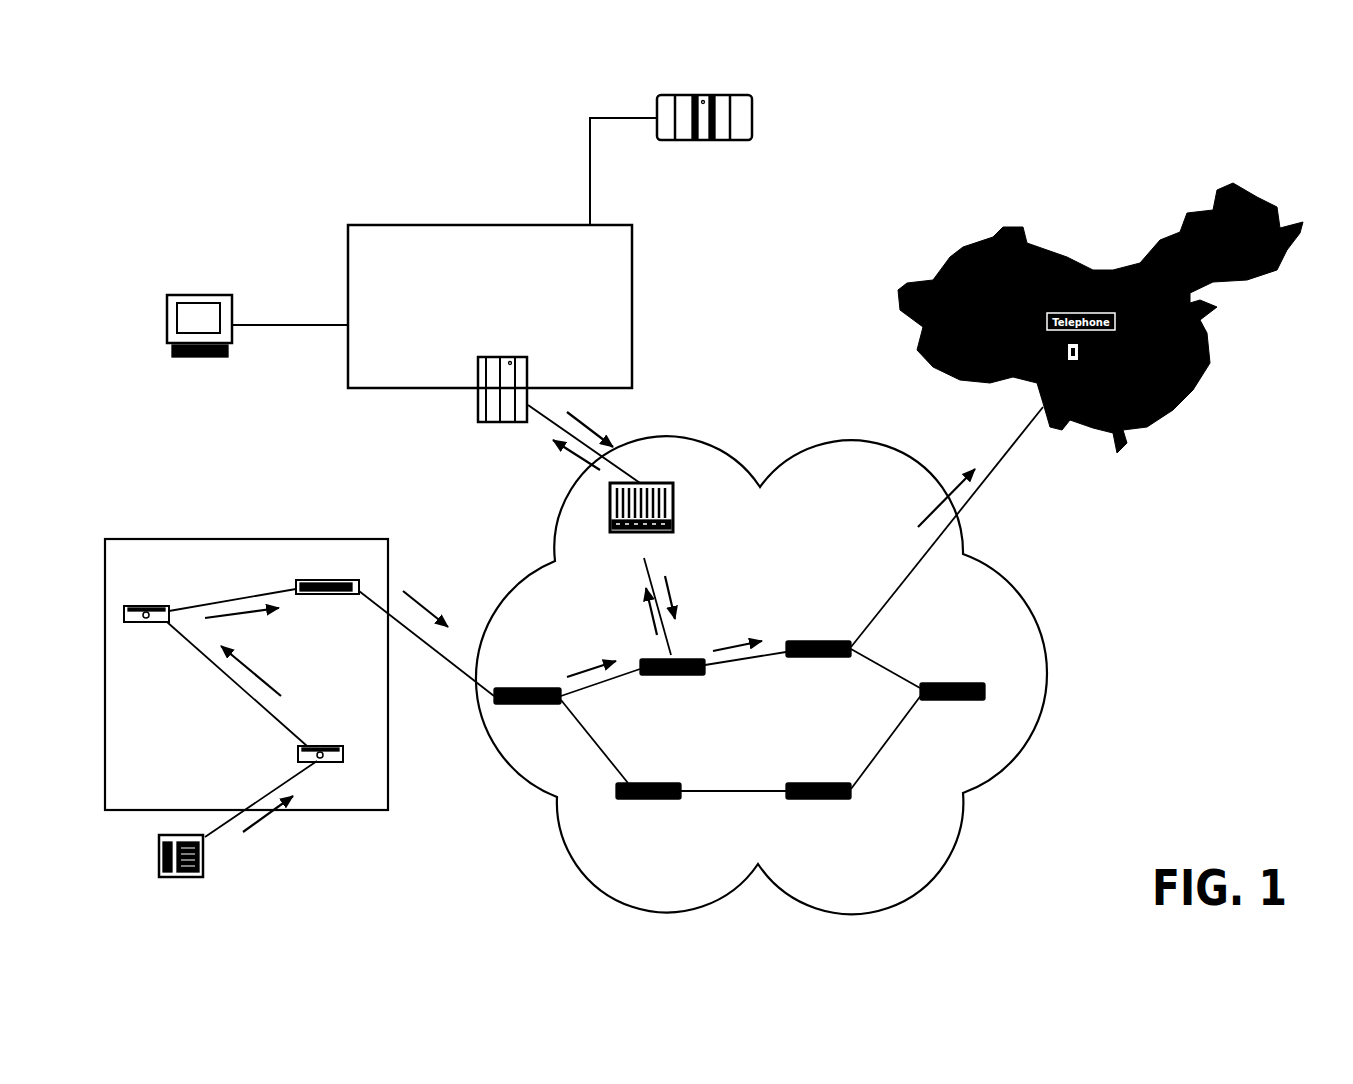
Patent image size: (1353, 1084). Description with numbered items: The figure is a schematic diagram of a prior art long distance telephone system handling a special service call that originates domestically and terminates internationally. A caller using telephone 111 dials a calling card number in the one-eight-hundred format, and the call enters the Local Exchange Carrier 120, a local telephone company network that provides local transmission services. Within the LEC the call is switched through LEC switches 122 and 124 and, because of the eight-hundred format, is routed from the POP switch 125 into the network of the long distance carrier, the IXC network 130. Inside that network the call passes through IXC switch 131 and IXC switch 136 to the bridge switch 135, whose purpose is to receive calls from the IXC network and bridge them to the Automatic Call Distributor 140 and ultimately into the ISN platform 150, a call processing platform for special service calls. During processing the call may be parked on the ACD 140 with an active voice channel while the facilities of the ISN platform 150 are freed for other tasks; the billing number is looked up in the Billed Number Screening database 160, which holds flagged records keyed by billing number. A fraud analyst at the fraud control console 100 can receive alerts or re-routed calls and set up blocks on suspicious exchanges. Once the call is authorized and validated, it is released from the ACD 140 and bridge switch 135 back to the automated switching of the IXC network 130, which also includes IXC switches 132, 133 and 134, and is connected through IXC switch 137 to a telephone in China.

The fraud control console 100 is at (188, 294).
The telephone 111 is at (203, 856).
The Local Exchange Carrier (LEC) 120 is at (184, 539).
The LEC switch 122 is at (298, 747).
The LEC switch 124 is at (146, 606).
The POP (Point-of-Presence) switch 125 is at (303, 582).
The IXC network 130 is at (838, 437).
The IXC switch 131 is at (500, 688).
The IXC switch 132 is at (627, 783).
The IXC switch 133 is at (800, 783).
The IXC switch 134 is at (926, 683).
The bridge switch 135 is at (668, 483).
The IXC switch 136 is at (692, 659).
The IXC switch 137 is at (814, 641).
The Automatic Call Distributor (ACD) 140 is at (478, 402).
The Intelligent Services Network (ISN) platform 150 is at (632, 278).
The Billed Number Screening (BNS) database 160 is at (752, 112).